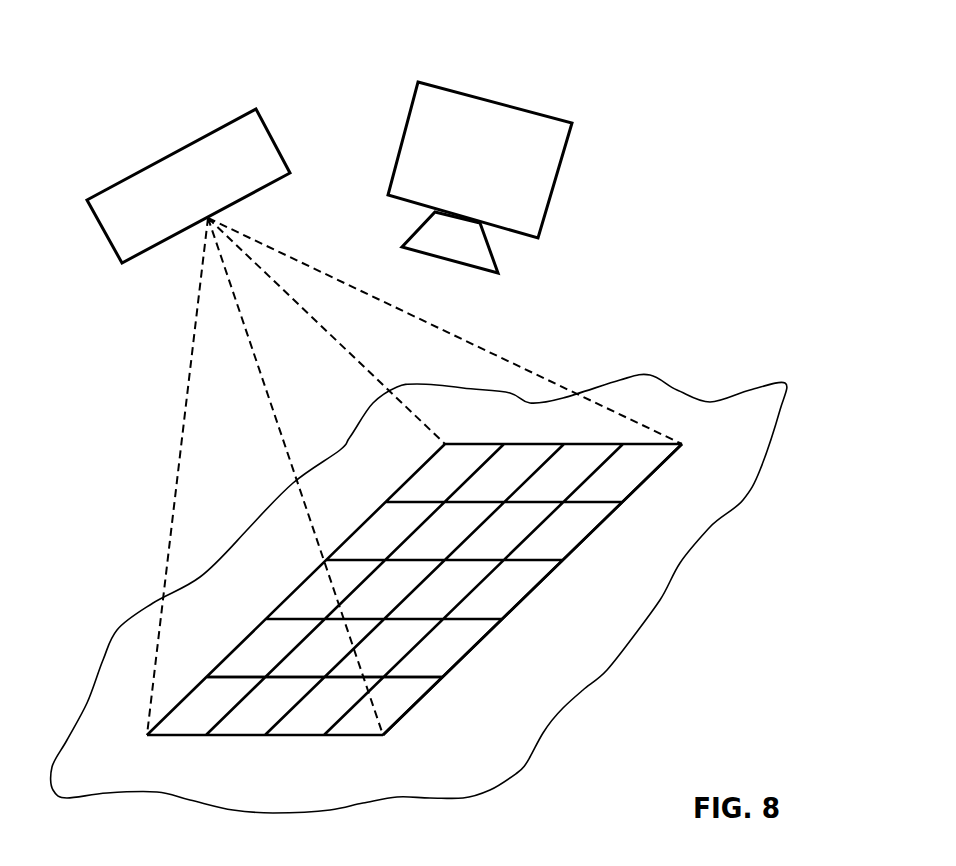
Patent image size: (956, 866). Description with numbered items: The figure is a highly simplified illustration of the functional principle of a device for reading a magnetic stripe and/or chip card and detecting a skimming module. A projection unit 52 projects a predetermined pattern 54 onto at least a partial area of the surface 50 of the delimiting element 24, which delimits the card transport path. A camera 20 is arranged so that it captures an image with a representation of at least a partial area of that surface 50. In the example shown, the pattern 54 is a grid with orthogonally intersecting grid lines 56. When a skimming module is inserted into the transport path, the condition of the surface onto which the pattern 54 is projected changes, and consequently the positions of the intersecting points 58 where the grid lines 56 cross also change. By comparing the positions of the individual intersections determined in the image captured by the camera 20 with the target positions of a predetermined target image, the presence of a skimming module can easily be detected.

The camera 20 is at (490, 120).
The delimiting element 24 is at (655, 587).
The surface 50 is at (635, 470).
The projection unit 52 is at (179, 173).
The pattern 54 is at (623, 430).
The grid lines 56 is at (423, 700).
The intersecting points 58 is at (327, 677).